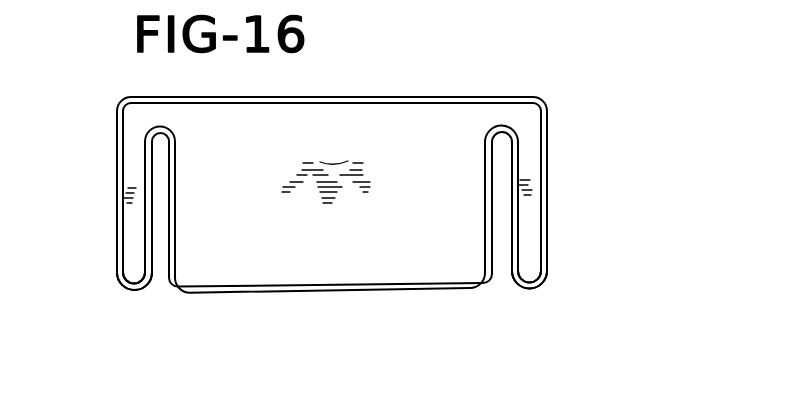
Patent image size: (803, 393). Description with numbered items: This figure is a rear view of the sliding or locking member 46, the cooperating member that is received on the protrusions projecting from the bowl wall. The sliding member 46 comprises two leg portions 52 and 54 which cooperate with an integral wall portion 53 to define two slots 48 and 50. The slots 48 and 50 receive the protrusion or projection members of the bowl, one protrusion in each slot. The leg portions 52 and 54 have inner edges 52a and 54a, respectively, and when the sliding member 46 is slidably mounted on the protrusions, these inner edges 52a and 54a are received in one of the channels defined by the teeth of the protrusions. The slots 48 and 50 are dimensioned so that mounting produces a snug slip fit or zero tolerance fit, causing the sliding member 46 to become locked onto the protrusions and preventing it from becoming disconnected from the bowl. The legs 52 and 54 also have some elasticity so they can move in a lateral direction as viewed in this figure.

The sliding member 46 is at (396, 96).
The slot 48 is at (160, 263).
The slot 50 is at (505, 257).
The leg portion 52 is at (130, 221).
The inner edge 52a is at (158, 177).
The leg portion 54 is at (530, 209).
The inner edge 54a is at (505, 161).
The integral wall portion 53 is at (326, 165).